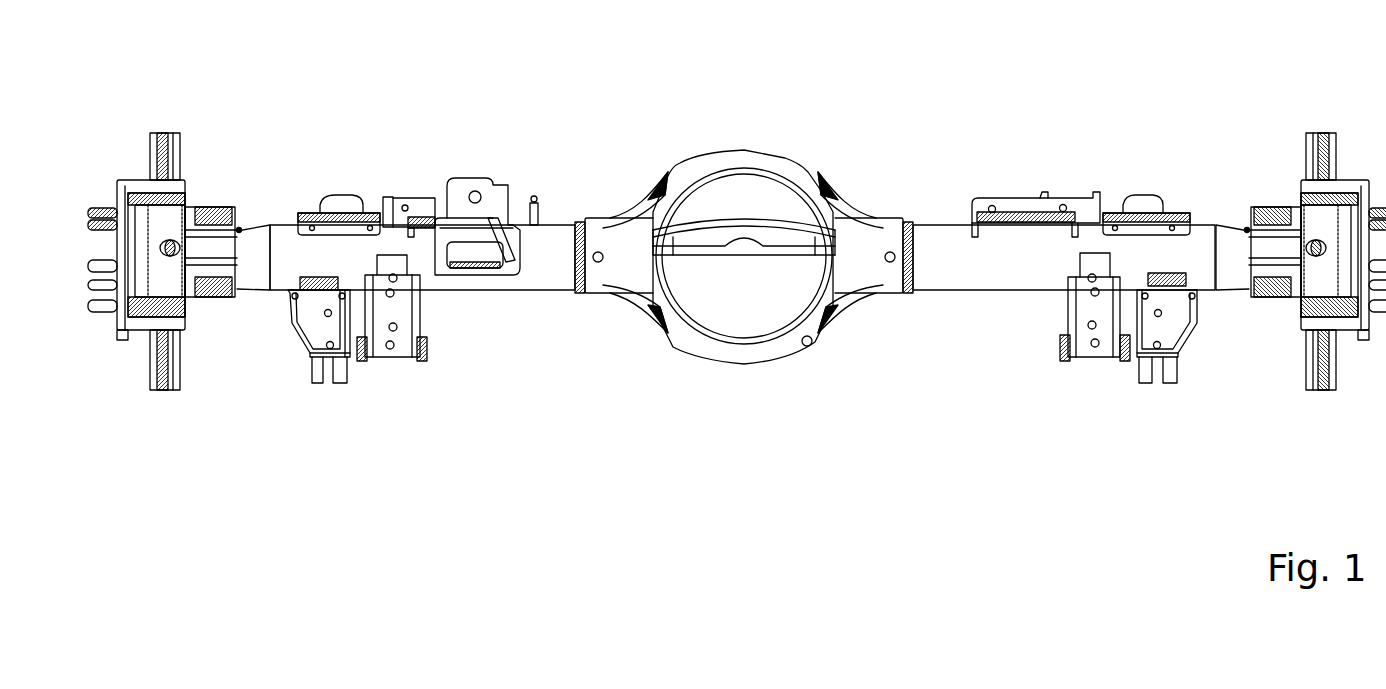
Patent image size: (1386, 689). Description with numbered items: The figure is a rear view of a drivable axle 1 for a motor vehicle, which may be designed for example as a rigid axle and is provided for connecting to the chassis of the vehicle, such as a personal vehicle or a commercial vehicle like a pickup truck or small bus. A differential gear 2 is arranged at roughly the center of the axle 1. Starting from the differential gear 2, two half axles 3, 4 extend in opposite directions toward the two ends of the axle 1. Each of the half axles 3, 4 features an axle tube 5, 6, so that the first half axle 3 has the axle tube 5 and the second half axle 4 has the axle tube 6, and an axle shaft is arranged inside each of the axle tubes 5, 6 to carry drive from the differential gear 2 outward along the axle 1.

The drivable axle 1 is at (771, 119).
The differential gear 2 is at (718, 200).
The half axle 3 is at (414, 178).
The half axle 4 is at (1067, 182).
The axle tube 5 is at (545, 267).
The axle tube 6 is at (943, 253).